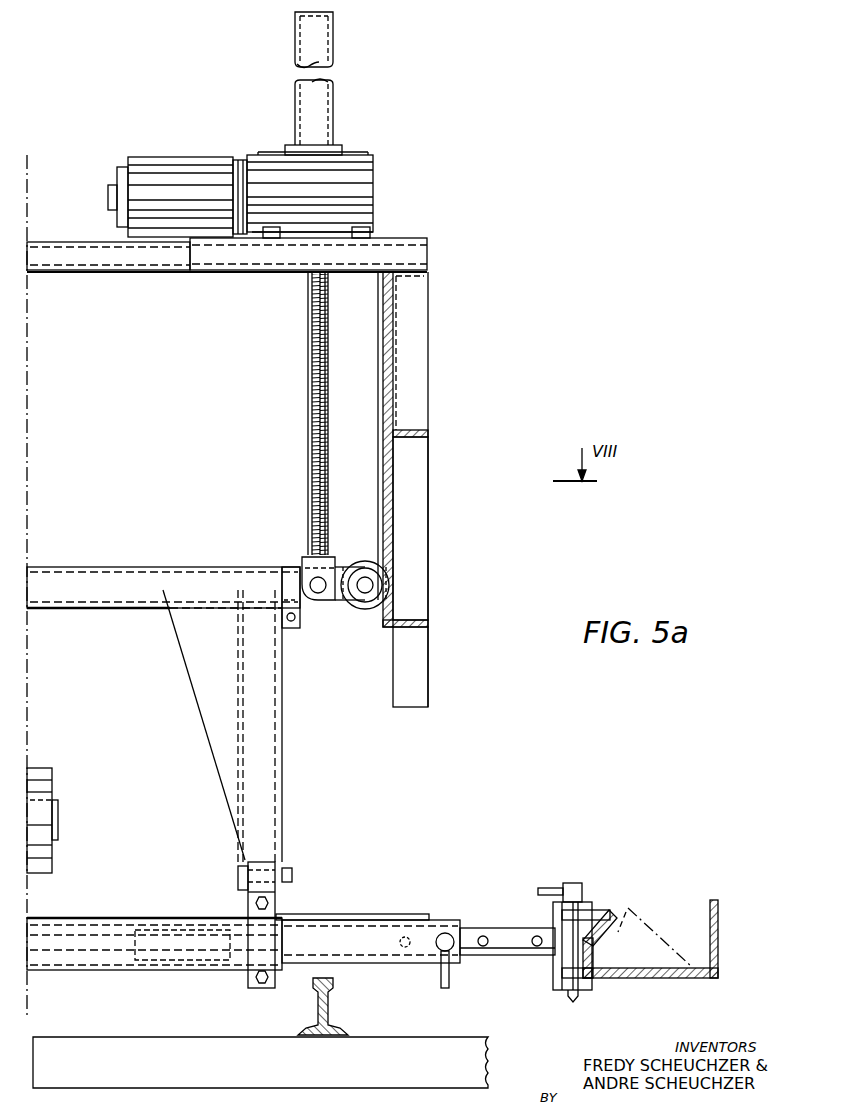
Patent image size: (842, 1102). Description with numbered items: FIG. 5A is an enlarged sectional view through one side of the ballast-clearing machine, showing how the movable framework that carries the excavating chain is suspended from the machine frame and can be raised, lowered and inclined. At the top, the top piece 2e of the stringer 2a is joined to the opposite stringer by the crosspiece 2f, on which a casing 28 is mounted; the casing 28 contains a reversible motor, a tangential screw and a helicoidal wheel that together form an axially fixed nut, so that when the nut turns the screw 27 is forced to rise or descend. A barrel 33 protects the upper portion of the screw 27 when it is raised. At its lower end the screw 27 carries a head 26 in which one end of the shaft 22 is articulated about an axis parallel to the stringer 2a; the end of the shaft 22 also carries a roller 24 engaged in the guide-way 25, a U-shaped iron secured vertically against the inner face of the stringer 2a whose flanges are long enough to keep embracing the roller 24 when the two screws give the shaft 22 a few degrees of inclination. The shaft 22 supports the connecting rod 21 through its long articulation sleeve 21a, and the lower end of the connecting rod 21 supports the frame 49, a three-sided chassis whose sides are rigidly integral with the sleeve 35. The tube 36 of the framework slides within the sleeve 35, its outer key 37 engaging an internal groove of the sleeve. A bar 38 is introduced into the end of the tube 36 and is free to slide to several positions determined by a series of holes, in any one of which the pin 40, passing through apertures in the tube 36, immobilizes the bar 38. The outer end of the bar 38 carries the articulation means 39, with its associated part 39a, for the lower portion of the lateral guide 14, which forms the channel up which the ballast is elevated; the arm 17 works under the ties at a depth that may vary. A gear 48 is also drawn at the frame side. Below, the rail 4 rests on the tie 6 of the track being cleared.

The barrel 33 is at (325, 110).
The casing 28 is at (182, 159).
The crosspiece 2f is at (60, 262).
The top piece 2e is at (428, 345).
The guide-way 25 is at (383, 437).
The stringer 2a is at (415, 507).
The screw 27 is at (310, 424).
The head 26 is at (313, 573).
The shaft 22 is at (338, 605).
The roller 24 is at (386, 593).
The articulation sleeve 21a is at (83, 600).
The connecting rod 21 is at (262, 730).
The gear 48 is at (50, 776).
The frame 49 is at (88, 918).
The sleeve 35 is at (252, 975).
The outer key 37 is at (350, 918).
The tube 36 is at (366, 950).
The pin 40 is at (447, 934).
The bar 38 is at (506, 940).
The articulation means 39 is at (588, 910).
The clamp bolt head 39a is at (573, 888).
The guide 14 is at (648, 979).
The arm 17 is at (658, 930).
The rail 4 is at (311, 984).
The tie 6 is at (81, 1037).